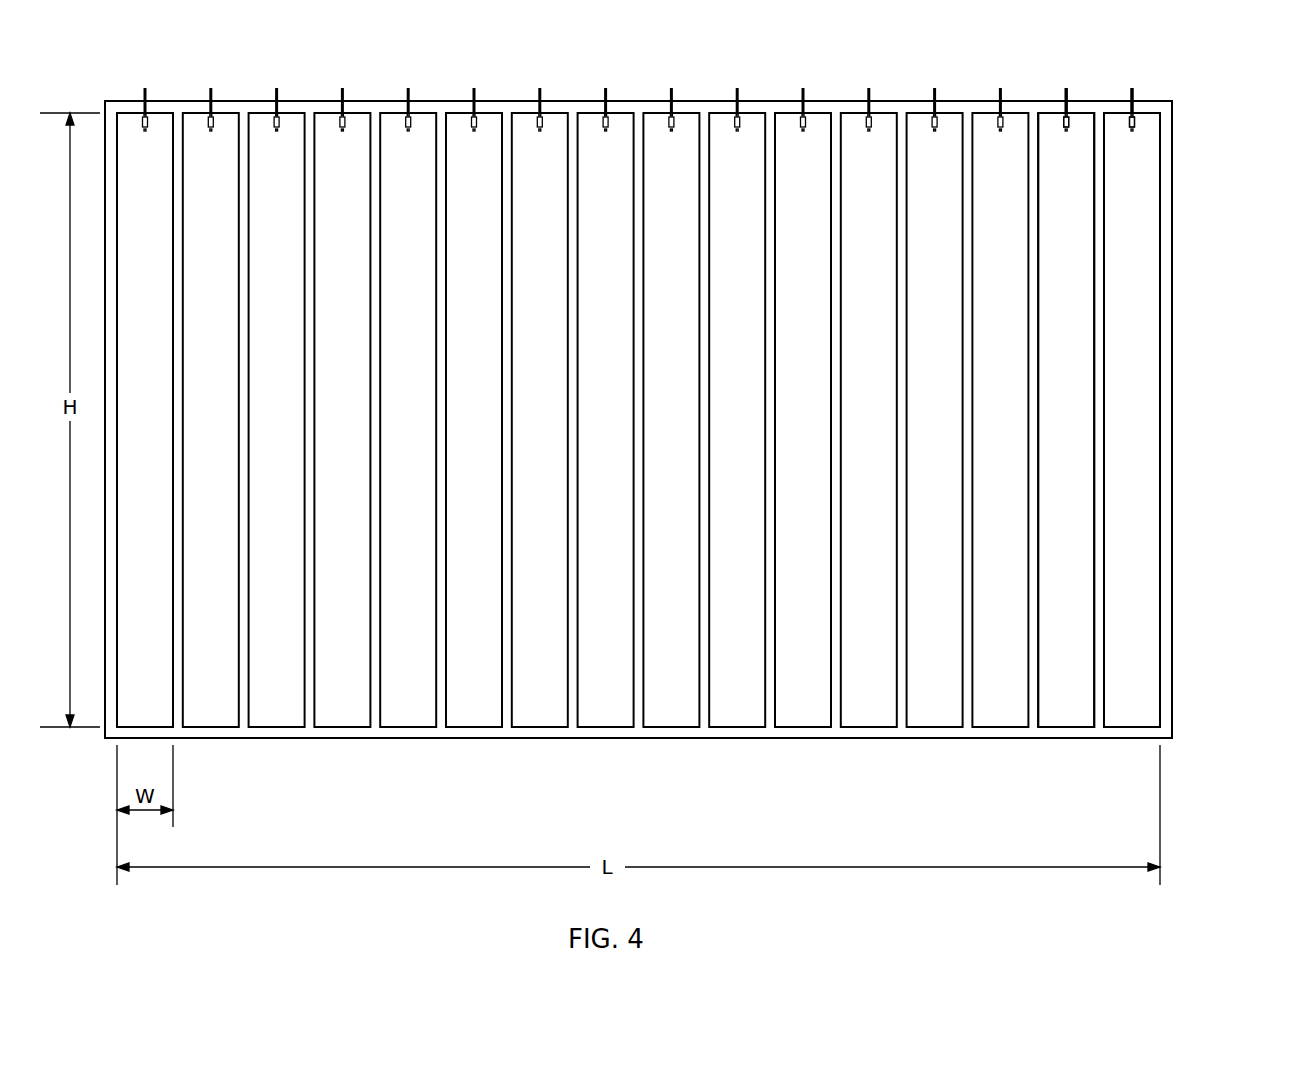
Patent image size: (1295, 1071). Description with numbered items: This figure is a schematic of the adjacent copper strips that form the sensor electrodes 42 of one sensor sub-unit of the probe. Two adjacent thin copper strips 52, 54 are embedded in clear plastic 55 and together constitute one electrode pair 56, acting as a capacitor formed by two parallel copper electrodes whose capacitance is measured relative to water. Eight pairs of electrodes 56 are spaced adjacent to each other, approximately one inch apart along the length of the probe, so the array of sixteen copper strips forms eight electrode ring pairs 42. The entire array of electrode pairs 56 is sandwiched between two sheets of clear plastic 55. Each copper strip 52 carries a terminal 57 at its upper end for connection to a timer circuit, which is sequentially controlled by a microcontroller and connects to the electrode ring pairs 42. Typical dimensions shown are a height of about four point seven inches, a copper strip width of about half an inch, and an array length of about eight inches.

The sensor electrodes 42 is at (1195, 107).
The copper strip 52 is at (1160, 218).
The copper strip 54 is at (1080, 325).
The plastic 55 is at (633, 105).
The electrode pair 56 is at (1157, 75).
The terminal 57 is at (925, 93).